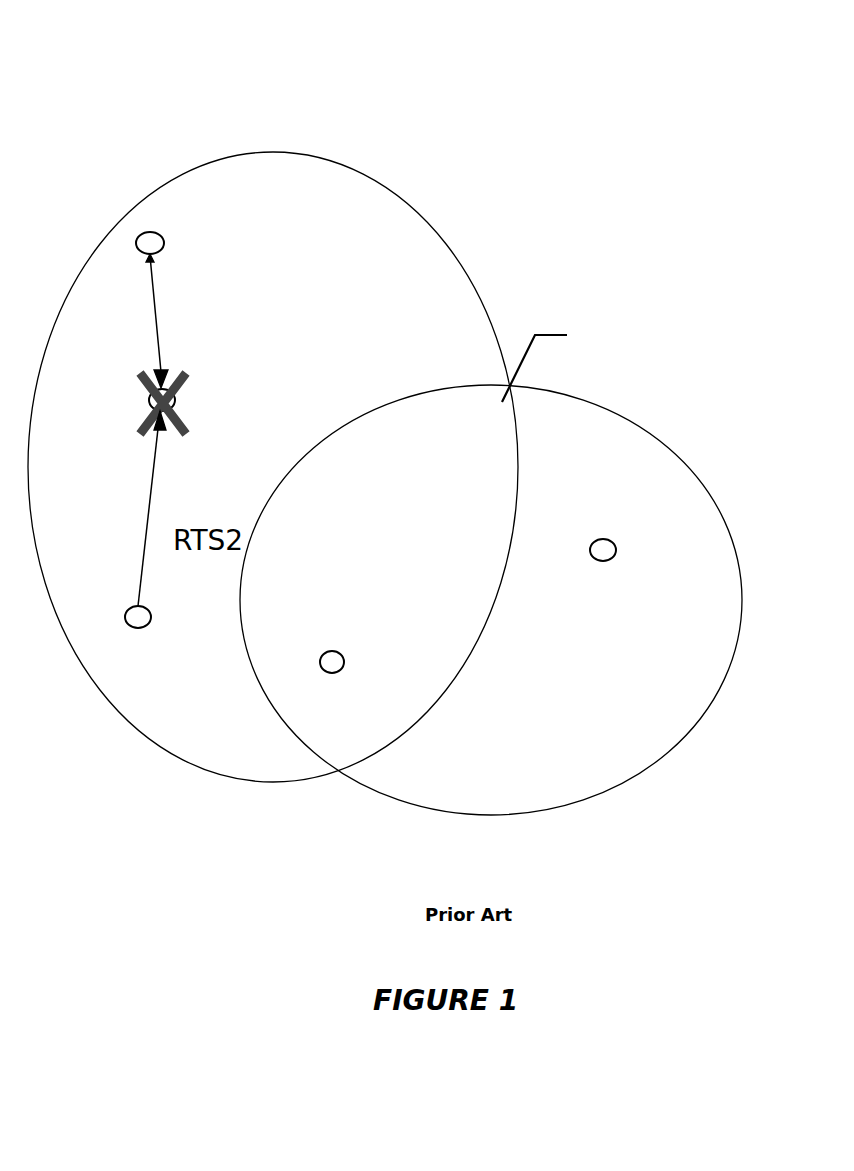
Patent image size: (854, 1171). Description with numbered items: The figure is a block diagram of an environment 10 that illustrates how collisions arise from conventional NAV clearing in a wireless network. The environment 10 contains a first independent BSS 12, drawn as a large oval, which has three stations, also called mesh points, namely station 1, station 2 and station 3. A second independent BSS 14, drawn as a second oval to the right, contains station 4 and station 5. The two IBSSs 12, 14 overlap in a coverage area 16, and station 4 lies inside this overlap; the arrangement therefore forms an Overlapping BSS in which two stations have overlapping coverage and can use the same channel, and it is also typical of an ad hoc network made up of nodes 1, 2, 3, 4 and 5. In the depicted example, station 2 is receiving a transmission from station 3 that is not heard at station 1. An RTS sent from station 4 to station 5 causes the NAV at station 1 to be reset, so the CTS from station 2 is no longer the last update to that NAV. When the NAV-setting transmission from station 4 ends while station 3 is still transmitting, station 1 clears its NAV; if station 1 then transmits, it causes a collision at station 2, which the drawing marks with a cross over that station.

The environment 10 is at (133, 118).
The first independent BSS 12 is at (355, 178).
The second independent BSS 14 is at (670, 452).
The coverage area 16 is at (551, 364).
The station 1 is at (166, 609).
The station 2 is at (185, 403).
The station 3 is at (175, 246).
The station 4 is at (353, 691).
The station 5 is at (644, 546).